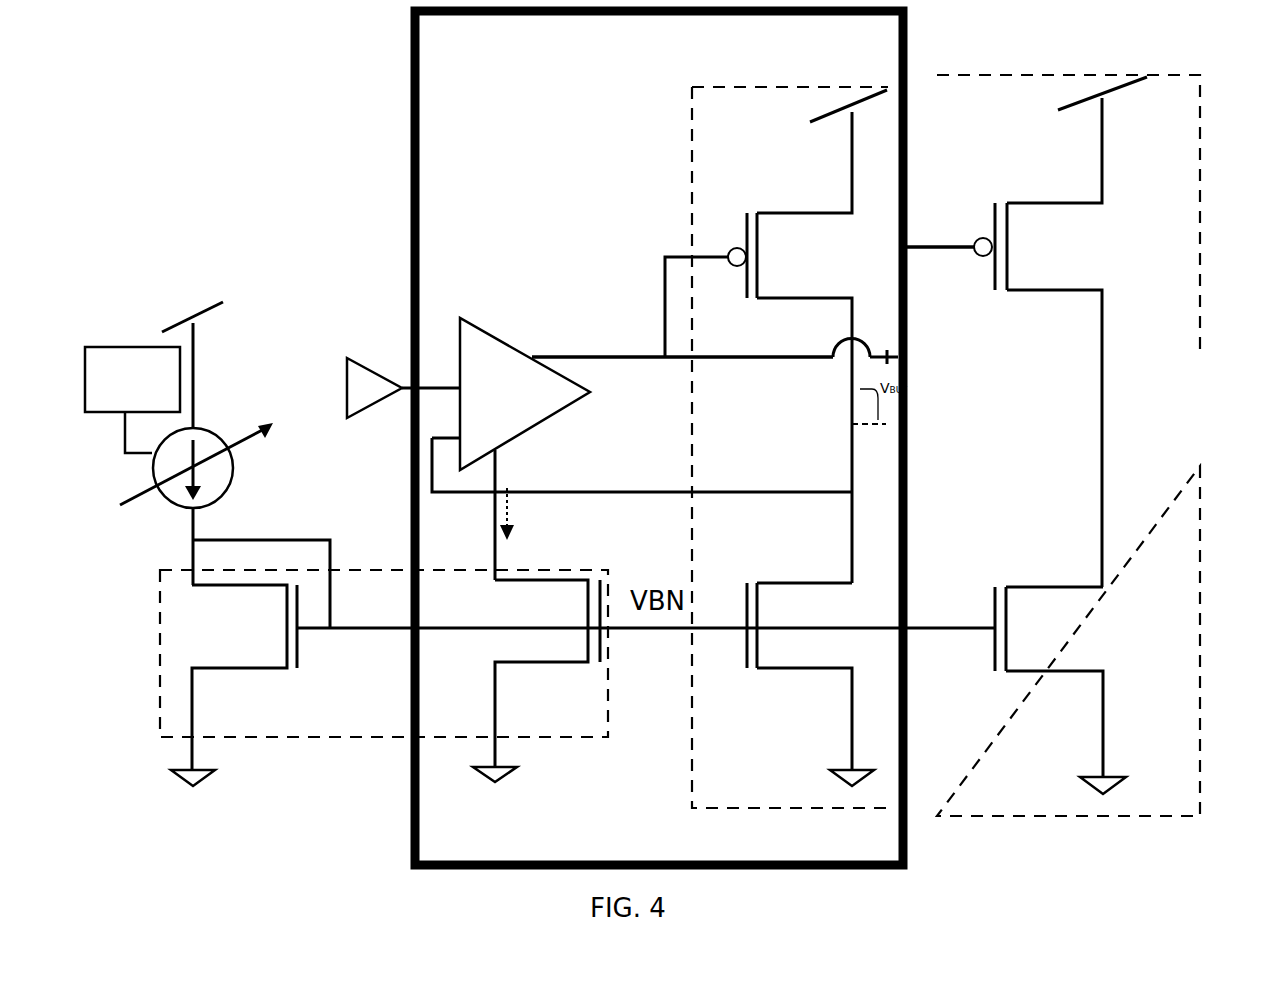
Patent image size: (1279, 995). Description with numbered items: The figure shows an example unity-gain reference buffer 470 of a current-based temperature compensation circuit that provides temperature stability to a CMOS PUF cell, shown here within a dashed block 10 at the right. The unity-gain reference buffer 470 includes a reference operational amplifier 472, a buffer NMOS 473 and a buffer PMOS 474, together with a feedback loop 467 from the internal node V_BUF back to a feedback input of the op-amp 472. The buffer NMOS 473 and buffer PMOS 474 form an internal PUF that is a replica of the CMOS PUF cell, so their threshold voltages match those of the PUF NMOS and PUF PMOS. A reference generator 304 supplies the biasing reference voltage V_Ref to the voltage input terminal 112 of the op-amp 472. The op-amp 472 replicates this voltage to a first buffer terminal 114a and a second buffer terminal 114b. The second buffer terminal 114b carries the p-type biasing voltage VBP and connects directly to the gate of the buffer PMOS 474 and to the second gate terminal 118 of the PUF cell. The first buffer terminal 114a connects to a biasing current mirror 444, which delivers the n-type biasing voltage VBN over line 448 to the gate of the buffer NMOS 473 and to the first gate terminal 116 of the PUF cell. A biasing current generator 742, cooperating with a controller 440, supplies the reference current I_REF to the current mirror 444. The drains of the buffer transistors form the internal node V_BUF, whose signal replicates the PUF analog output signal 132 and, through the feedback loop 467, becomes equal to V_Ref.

The unity-gain reference buffer 470 is at (410, 66).
The reference operational amplifier 472 is at (482, 330).
The buffer PMOS 474 is at (775, 210).
The buffer NMOS 473 is at (792, 580).
The second buffer terminal 114b is at (562, 356).
The first buffer terminal 114a is at (498, 466).
The voltage input terminal 112 is at (426, 392).
The reference generator 304 is at (353, 420).
The biasing current generator 742 is at (207, 430).
The controller 440 is at (132, 400).
The connection wire 448 is at (233, 538).
The current mirror 444 is at (160, 636).
The feedback line VBUF 467 is at (462, 496).
The second gate terminal 118 is at (963, 258).
The first gate terminal 116 is at (973, 640).
The PUF analog output signal 132 is at (1108, 420).
The PUF circuit 10 is at (1200, 95).